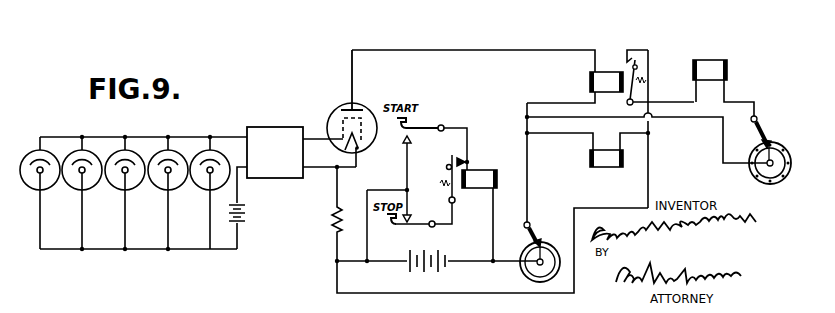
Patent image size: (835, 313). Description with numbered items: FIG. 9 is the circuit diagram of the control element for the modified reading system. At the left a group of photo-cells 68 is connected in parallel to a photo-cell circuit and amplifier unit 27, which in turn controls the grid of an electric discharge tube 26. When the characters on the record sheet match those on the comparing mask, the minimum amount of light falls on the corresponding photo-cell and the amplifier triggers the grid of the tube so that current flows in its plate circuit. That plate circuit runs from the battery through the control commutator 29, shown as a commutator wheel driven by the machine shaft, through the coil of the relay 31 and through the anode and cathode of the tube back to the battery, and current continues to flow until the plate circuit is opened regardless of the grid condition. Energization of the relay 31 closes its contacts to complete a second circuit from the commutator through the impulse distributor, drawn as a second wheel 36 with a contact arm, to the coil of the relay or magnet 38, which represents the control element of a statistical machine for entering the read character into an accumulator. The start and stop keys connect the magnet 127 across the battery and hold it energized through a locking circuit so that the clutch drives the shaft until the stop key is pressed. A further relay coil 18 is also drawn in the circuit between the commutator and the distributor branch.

The photo-cells 68 is at (31, 150).
The amplifier unit 27 is at (274, 130).
The electric discharge tube 26 is at (338, 114).
The magnet 127 is at (479, 172).
The control commutator 29 is at (537, 259).
The relay 31 is at (609, 62).
The relay coil 18 is at (608, 168).
The relay or magnet 38 is at (710, 62).
The commutator wheel 36 is at (752, 173).